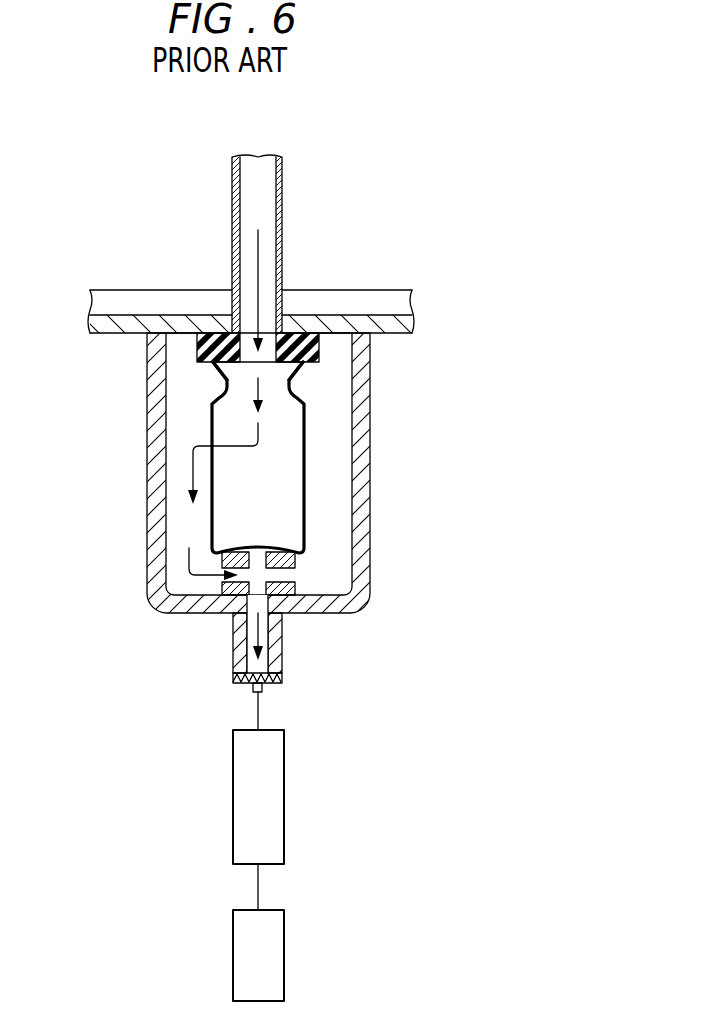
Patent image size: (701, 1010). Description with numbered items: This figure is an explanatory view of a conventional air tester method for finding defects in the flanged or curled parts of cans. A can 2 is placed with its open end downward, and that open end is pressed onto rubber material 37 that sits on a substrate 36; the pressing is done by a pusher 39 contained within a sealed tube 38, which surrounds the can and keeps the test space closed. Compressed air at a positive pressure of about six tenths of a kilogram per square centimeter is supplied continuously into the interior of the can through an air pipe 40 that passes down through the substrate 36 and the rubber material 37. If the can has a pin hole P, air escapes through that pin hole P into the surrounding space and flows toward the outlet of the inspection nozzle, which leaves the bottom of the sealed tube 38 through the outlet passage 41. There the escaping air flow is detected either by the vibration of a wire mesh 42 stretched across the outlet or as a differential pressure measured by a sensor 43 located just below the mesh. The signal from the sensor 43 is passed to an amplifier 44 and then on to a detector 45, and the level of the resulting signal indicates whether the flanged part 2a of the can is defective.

The can 2 is at (303, 488).
The flanged part 2a is at (215, 372).
The pin hole P is at (212, 445).
The substrate 36 is at (191, 298).
The rubber material 37 is at (320, 358).
The sealed tube 38 is at (372, 437).
The pusher 39 is at (292, 560).
The air pipe 40 is at (270, 204).
The outlet pipe 41 is at (283, 632).
The wire mesh 42 is at (233, 676).
The sensor 43 is at (262, 690).
The amplifier 44 is at (233, 813).
The detector 45 is at (233, 950).